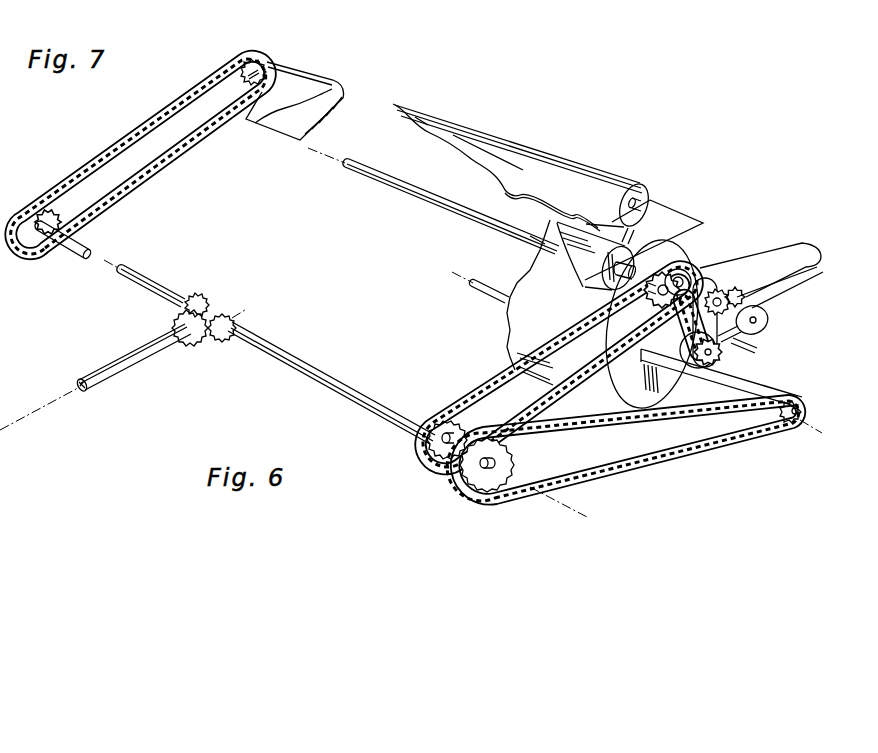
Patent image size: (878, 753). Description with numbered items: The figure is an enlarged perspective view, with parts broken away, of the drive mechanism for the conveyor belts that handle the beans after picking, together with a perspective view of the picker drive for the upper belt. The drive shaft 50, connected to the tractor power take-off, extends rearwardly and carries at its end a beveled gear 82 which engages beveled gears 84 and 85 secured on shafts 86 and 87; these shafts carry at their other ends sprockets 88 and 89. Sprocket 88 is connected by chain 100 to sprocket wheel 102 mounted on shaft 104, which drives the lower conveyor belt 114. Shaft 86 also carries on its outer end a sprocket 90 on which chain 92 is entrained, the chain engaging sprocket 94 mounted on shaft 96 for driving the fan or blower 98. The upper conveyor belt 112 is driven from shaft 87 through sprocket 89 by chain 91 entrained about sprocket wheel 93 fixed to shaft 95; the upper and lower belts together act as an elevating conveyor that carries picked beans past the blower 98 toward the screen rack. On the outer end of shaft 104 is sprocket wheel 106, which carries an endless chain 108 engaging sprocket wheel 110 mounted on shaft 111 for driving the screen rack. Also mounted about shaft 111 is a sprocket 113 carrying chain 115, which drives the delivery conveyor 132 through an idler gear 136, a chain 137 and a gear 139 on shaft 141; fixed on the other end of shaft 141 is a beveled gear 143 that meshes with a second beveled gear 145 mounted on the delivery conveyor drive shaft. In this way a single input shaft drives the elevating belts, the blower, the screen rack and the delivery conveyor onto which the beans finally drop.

In FIG. 6, the drive shaft 50 is at (137, 353).
In FIG. 6, the beveled gear 82 is at (196, 348).
In FIG. 6, the beveled gear 84 is at (236, 327).
In FIG. 6, the beveled gear 85 is at (198, 300).
In FIG. 6, the shaft 86 is at (308, 369).
In FIG. 6, the shaft 87 is at (165, 292).
In FIG. 6, the sprocket 88 is at (447, 462).
In FIG. 7, the sprocket 89 is at (32, 242).
In FIG. 6, the sprocket 90 is at (482, 484).
In FIG. 7, the chain 91 is at (83, 168).
In FIG. 6, the chain 92 is at (610, 468).
In FIG. 7, the sprocket wheel 93 is at (260, 68).
In FIG. 6, the sprocket 94 is at (787, 430).
In FIG. 7, the shaft 95 is at (345, 93).
In FIG. 6, the shaft 96 is at (735, 389).
In FIG. 6, the fan or blower 98 is at (531, 322).
In FIG. 6, the chain 100 is at (487, 382).
In FIG. 6, the sprocket wheel 102 is at (678, 242).
In FIG. 6, the shaft 104 is at (490, 222).
In FIG. 6, the sprocket wheel 106 is at (668, 275).
In FIG. 6, the endless chain 108 is at (660, 332).
In FIG. 6, the sprocket wheel 110 is at (726, 291).
In FIG. 6, the shaft 111 is at (700, 312).
In FIG. 6, the upper conveyor belt 112 is at (578, 174).
In FIG. 6, the sprocket 113 is at (682, 270).
In FIG. 6, the lower conveyor belt 114 is at (583, 253).
In FIG. 6, the chain 115 is at (735, 333).
In FIG. 6, the delivery conveyor 132 is at (788, 254).
In FIG. 6, the idler gear 136 is at (712, 357).
In FIG. 6, the chain 137 is at (746, 344).
In FIG. 6, the gear 139 is at (768, 312).
In FIG. 6, the shaft 141 is at (757, 320).
In FIG. 6, the beveled gear 143 is at (718, 300).
In FIG. 6, the beveled gear 145 is at (745, 290).